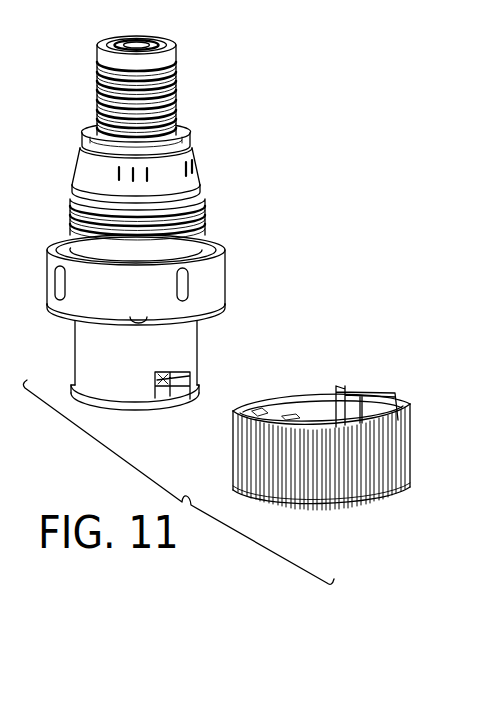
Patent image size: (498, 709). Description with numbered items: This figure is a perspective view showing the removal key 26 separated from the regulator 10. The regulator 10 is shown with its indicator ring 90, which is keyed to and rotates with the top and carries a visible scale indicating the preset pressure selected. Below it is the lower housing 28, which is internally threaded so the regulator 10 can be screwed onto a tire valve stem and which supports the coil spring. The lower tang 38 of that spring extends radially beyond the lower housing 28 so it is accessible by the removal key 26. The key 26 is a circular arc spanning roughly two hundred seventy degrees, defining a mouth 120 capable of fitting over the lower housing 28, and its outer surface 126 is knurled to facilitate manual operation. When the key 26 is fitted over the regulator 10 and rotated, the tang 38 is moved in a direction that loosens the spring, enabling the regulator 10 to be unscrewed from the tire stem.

The regulator 10 is at (182, 221).
The indicator ring 90 is at (187, 152).
The lower housing 28 is at (178, 365).
The lower tang 38 is at (167, 382).
The removal key 26 is at (320, 447).
The mouth 120 is at (312, 413).
The outer surface 126 is at (250, 457).